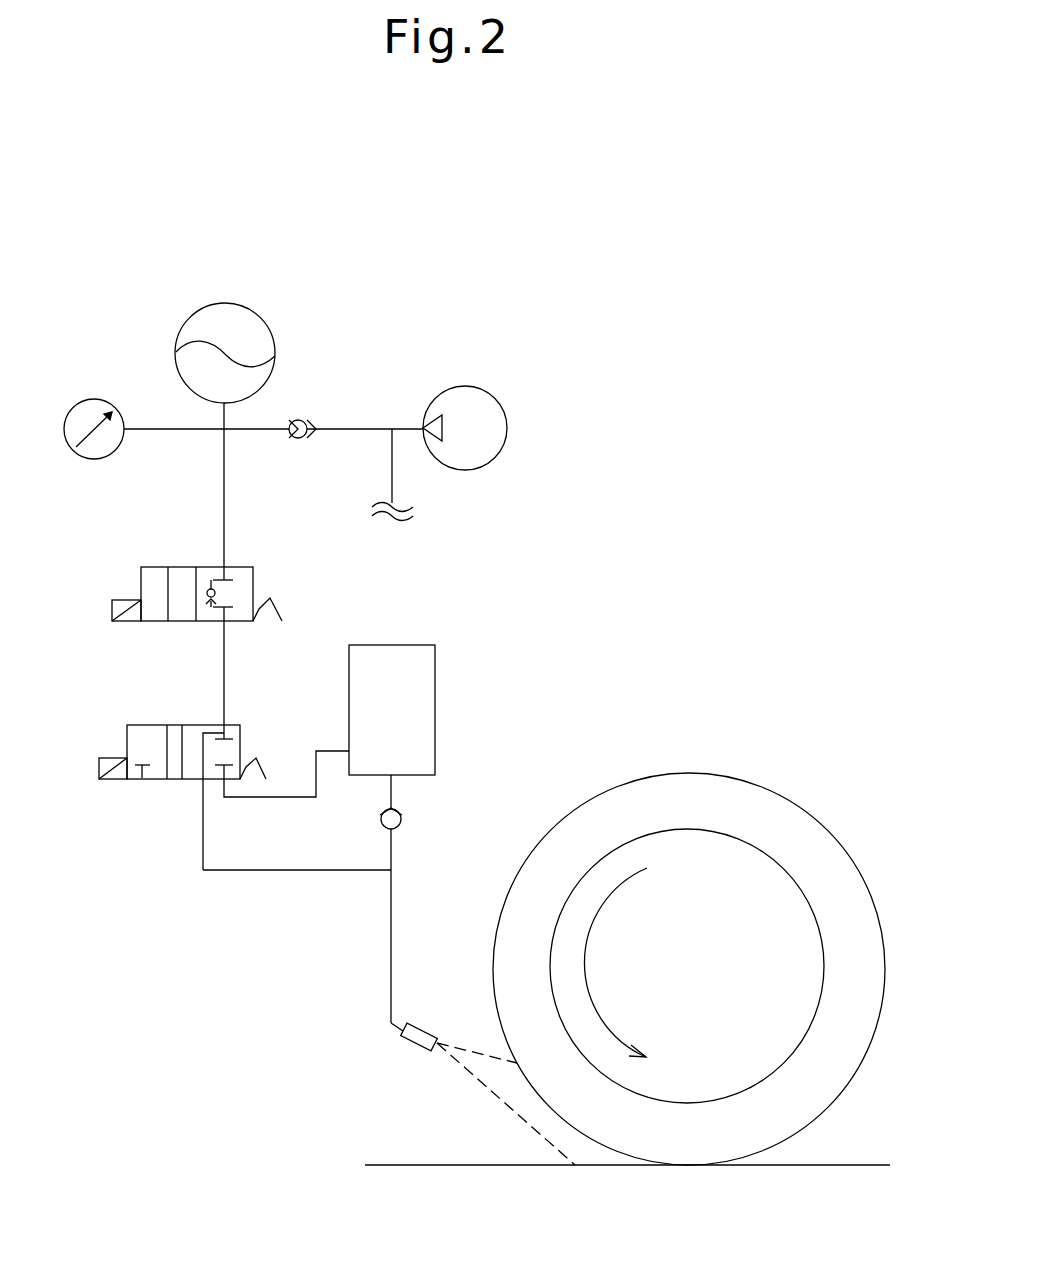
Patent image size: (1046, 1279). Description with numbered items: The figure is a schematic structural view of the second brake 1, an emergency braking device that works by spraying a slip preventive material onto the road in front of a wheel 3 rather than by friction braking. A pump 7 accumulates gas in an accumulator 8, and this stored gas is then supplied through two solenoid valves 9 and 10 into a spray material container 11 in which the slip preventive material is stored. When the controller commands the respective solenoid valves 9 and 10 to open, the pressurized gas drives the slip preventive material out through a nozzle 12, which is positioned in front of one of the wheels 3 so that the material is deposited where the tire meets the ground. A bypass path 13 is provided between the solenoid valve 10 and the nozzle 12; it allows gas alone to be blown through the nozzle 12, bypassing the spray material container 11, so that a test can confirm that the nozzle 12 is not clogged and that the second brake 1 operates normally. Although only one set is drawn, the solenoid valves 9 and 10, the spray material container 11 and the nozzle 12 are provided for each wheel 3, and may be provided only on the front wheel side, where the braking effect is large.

The second brake 1 is at (396, 300).
The wheel 3 is at (775, 810).
The pump 7 is at (495, 418).
The accumulator 8 is at (228, 318).
The solenoid valve 9 is at (148, 580).
The solenoid valve 10 is at (137, 733).
The spray material container 11 is at (418, 708).
The nozzle 12 is at (417, 1038).
The bypass path 13 is at (270, 870).